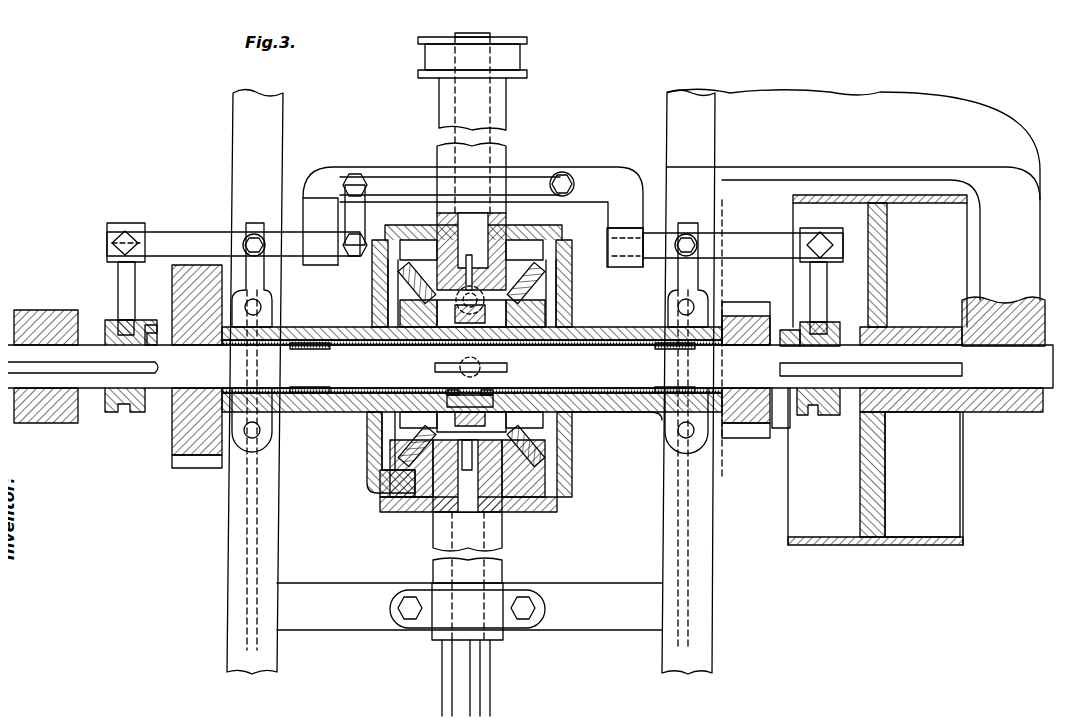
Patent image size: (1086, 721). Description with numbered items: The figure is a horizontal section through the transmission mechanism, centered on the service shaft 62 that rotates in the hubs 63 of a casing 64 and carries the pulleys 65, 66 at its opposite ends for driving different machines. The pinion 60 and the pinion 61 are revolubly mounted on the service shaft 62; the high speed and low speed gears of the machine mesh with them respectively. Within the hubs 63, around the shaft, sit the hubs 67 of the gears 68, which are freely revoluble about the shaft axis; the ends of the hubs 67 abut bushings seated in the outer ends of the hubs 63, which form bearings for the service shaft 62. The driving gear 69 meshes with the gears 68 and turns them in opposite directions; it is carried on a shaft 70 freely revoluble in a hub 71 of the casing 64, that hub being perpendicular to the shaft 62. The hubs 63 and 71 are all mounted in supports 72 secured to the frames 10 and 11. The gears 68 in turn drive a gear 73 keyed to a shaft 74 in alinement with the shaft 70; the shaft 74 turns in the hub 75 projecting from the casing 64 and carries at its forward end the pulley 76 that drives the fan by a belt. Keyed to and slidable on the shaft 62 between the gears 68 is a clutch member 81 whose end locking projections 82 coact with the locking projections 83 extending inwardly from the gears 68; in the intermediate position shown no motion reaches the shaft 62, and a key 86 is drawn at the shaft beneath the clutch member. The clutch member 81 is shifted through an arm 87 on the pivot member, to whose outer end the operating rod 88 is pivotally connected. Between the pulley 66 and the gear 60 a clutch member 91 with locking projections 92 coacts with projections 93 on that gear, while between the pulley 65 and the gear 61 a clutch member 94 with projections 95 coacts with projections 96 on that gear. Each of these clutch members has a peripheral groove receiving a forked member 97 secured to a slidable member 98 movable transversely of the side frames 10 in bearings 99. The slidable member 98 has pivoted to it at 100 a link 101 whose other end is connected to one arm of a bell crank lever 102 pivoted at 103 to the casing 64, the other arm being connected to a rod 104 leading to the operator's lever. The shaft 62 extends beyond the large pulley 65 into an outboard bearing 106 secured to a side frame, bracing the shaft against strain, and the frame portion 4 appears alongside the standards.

The frame 4 is at (487, 423).
The frame 10 is at (278, 532).
The frame 11 is at (598, 597).
The pinion 60 is at (192, 455).
The pinion 61 is at (740, 312).
The service shaft 62 is at (600, 412).
The hubs 63 is at (318, 338).
The casing 64 is at (378, 455).
The pulley 65 is at (885, 545).
The pulley 66 is at (66, 423).
The hubs 67 is at (290, 356).
The gears 68 is at (545, 268).
The driving gear 69 is at (515, 500).
The shaft 70 is at (460, 505).
The hub 71 is at (432, 569).
The supports 72 is at (527, 594).
The gear 73 is at (420, 262).
The shaft 74 is at (485, 235).
The hub 75 is at (500, 152).
The pulley 76 is at (527, 47).
The clutch member 81 is at (462, 393).
The locking projections 82 is at (445, 392).
The locking projections 83 is at (370, 412).
The key 86 is at (435, 367).
The arm 87 is at (500, 283).
The operating rod 88 is at (690, 612).
The clutch member 91 is at (125, 412).
The locking projections 92 is at (133, 318).
The locking projections 93 is at (158, 324).
The clutch member 94 is at (830, 415).
The locking projections 95 is at (787, 330).
The locking projections 96 is at (779, 428).
The forked member 97 is at (120, 318).
The slidable member 98 is at (186, 236).
The bearings 99 is at (254, 232).
The pivot 100 is at (568, 175).
The link 101 is at (525, 178).
The bell crank lever 102 is at (355, 197).
The pivot 103 is at (492, 667).
The rod 104 is at (258, 483).
The outboard bearing 106 is at (1044, 308).